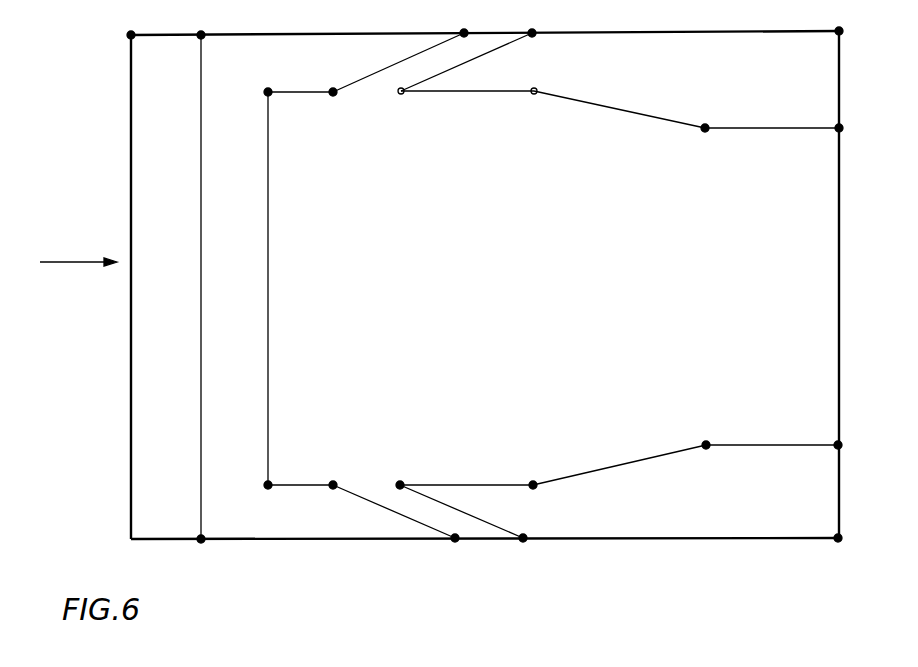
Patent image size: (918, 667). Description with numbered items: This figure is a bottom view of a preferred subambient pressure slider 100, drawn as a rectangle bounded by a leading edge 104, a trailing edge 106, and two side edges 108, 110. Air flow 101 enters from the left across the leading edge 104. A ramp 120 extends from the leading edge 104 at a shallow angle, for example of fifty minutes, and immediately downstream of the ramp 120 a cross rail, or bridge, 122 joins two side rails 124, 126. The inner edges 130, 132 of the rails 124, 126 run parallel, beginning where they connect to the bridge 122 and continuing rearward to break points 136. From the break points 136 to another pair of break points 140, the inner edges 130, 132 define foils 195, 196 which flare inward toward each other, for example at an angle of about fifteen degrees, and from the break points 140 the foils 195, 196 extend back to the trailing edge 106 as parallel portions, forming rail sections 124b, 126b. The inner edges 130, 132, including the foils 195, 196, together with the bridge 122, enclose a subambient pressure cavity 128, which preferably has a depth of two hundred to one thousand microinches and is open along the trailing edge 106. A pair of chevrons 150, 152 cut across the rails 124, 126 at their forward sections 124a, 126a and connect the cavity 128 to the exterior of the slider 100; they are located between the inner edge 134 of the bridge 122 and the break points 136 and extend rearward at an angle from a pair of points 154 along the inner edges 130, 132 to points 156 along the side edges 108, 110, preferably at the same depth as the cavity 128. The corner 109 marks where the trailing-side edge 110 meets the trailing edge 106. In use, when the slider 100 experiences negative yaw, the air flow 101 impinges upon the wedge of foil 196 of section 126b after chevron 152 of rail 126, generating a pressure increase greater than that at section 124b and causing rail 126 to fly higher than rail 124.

The slider 100 is at (103, 504).
The air flow 101 is at (69, 263).
The leading edge 104 is at (130, 100).
The trailing edge 106 is at (840, 201).
The side edge 108 is at (330, 541).
The top corner 109 is at (841, 32).
The side edge 110 is at (318, 32).
The ramp 120 is at (178, 199).
The cross rail (bridge) 122 is at (243, 198).
The side rail 124 is at (362, 530).
The lower passage inlet portion 124a is at (290, 532).
The section of rail 124 124b is at (715, 510).
The side rail 126 is at (372, 57).
The upper passage inlet portion 126a is at (300, 57).
The section of rail 126 126b is at (748, 74).
The subambient pressure cavity 128 is at (418, 199).
The inner edge 130 is at (524, 484).
The inner edge 132 is at (525, 92).
The inner edge of bridge 134 is at (268, 170).
The break point 136 is at (538, 93).
The break point 140 is at (707, 124).
The chevron 150 is at (485, 530).
The chevron 152 is at (490, 43).
The point 154 is at (338, 92).
The point 156 is at (458, 36).
The foil 195 is at (643, 460).
The foil 196 is at (620, 110).